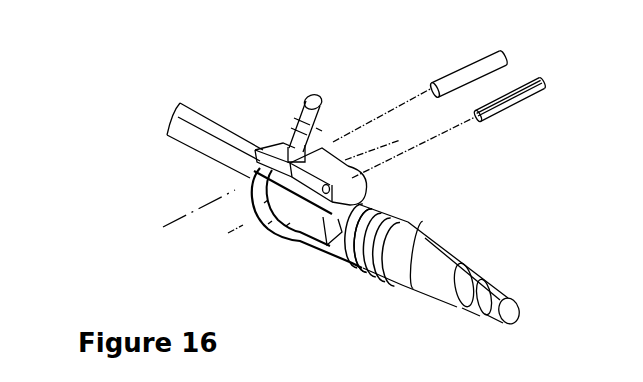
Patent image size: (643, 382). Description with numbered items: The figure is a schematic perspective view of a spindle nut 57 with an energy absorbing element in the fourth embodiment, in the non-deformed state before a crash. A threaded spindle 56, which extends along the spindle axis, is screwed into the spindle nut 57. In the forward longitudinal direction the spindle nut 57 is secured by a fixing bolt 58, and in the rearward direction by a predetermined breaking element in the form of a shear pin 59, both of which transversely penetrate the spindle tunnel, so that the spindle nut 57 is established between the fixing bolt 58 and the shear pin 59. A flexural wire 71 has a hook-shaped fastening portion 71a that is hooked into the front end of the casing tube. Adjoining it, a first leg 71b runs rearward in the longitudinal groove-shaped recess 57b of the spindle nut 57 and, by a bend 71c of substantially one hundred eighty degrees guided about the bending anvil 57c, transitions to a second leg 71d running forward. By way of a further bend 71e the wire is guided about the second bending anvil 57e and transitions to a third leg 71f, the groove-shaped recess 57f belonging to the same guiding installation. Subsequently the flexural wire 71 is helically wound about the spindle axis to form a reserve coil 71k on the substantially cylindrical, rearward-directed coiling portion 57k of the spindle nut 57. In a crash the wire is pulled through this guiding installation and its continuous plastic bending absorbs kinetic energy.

The threaded spindle 56 is at (186, 133).
The spindle nut 57 is at (324, 228).
The groove-shaped recess 57b is at (397, 128).
The bending anvil 57c is at (373, 190).
The second bending anvil 57e is at (248, 190).
The groove-shaped recess 57f is at (270, 222).
The coiling portion 57k is at (427, 265).
The fixing bolt 58 is at (472, 72).
The shear pin 59 is at (528, 98).
The flexural wire 71 is at (330, 70).
The fastening portion 71a is at (300, 100).
The first leg 71b is at (318, 128).
The bend 71c is at (390, 202).
The second leg 71d is at (267, 202).
The bend 71e is at (255, 179).
The third leg 71f is at (288, 224).
The reserve coil 71k is at (380, 278).